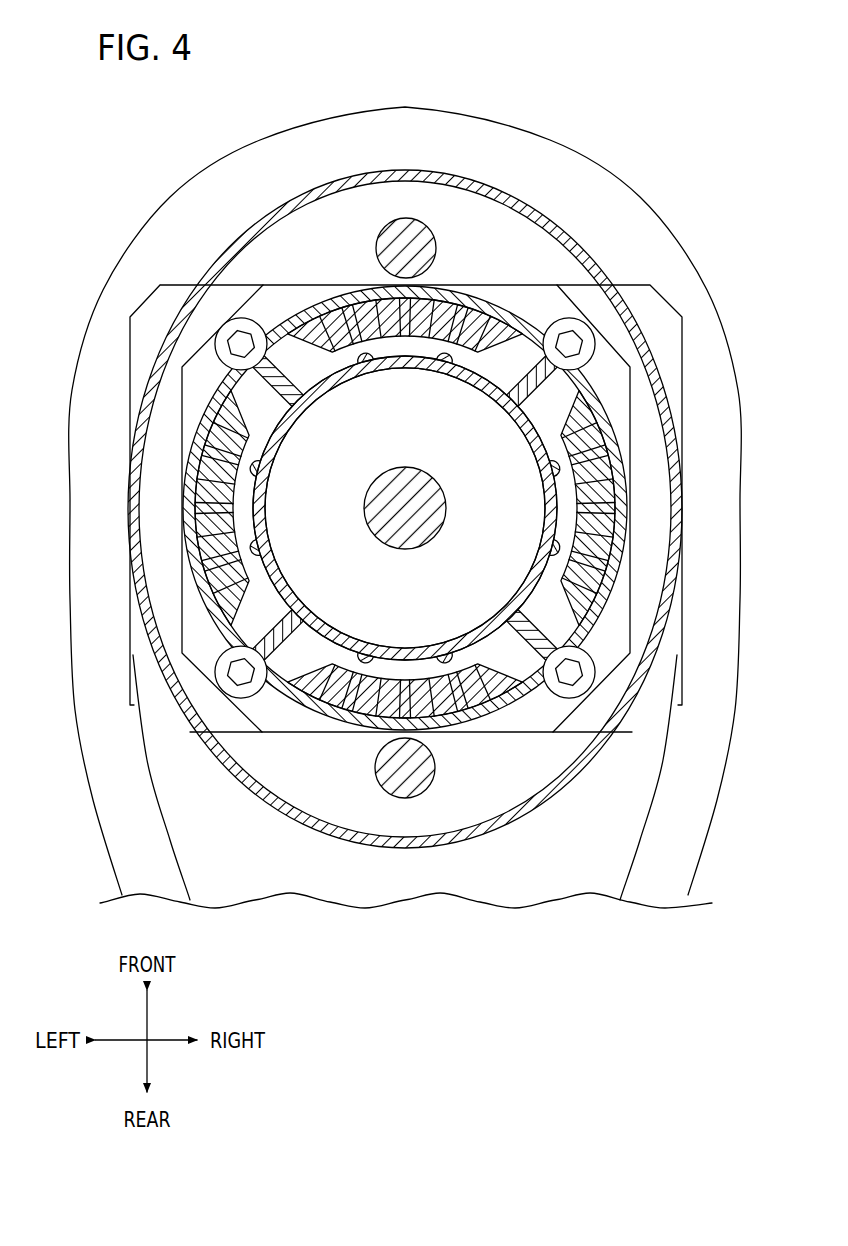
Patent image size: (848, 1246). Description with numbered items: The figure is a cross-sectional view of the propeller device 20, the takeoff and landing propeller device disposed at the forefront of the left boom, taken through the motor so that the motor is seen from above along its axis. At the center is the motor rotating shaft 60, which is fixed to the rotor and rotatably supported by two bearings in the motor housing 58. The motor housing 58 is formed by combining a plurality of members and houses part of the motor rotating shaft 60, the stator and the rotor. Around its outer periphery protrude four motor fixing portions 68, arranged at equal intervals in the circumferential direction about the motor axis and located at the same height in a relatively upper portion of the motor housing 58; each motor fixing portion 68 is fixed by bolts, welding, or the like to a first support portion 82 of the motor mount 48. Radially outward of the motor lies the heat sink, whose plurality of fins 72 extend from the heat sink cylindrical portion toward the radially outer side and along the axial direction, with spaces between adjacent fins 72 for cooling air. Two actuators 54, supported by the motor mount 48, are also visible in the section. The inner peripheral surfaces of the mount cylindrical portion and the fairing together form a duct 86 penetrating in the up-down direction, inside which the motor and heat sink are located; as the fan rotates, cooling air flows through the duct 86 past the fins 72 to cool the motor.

The propeller device 20 is at (745, 93).
The motor mount 48 is at (596, 302).
The actuator 54 is at (425, 244).
The motor housing 58 is at (190, 497).
The motor rotating shaft 60 is at (430, 494).
The motor fixing portion 68 is at (245, 317).
The fin 72 is at (598, 527).
The first support portion 82 is at (306, 294).
The duct 86 is at (370, 316).